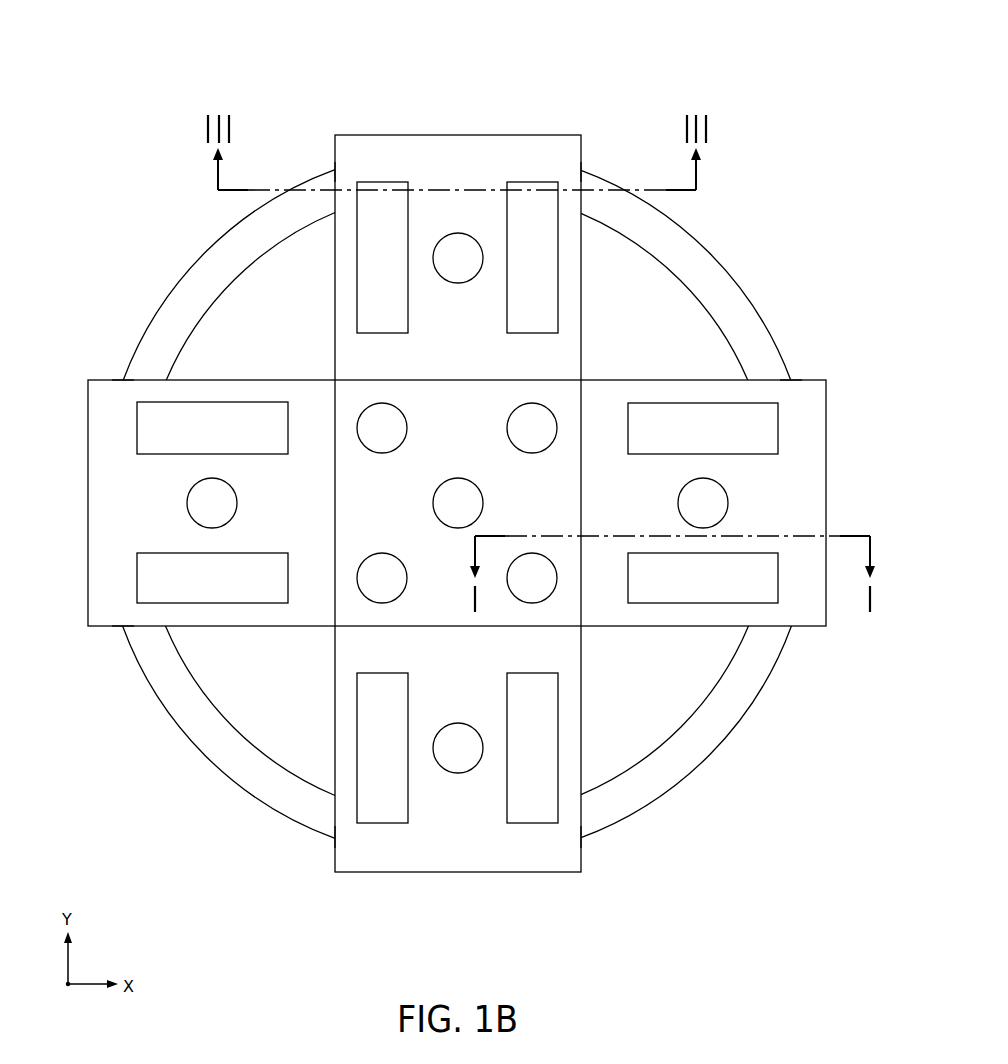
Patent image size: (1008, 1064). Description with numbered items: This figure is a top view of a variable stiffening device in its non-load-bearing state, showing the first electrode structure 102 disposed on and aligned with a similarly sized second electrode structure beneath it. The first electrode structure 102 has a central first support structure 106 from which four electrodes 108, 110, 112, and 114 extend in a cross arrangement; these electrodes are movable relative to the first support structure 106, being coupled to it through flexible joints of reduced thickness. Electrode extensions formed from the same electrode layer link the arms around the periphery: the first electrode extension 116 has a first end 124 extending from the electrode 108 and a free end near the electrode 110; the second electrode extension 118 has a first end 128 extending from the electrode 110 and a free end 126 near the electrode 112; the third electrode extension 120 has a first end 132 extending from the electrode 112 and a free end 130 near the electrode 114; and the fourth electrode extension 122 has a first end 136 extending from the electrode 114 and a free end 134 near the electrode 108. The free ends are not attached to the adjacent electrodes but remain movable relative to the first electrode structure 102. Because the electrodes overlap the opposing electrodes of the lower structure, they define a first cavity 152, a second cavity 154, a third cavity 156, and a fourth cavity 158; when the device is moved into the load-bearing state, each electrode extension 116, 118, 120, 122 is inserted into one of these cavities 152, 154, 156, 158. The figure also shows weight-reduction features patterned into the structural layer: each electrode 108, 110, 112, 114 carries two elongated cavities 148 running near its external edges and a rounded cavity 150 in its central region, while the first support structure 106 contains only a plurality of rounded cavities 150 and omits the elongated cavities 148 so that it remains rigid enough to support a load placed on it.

The first electrode structure 102 is at (838, 472).
The first support structure 106 is at (458, 390).
The electrode 108 is at (415, 873).
The electrode 110 is at (826, 505).
The electrode 112 is at (418, 134).
The electrode 114 is at (262, 380).
The first electrode extension 116 is at (713, 752).
The second electrode extension 118 is at (717, 252).
The third electrode extension 120 is at (200, 252).
The fourth electrode extension 122 is at (200, 755).
The first end 124 is at (578, 827).
The free end 126 is at (581, 172).
The first end 128 is at (776, 378).
The free end 130 is at (138, 378).
The first end 132 is at (335, 172).
The free end 134 is at (338, 827).
The first end 136 is at (140, 630).
The elongated cavities 148 is at (145, 428).
The rounded cavity 150 is at (187, 503).
The first cavity 152 is at (447, 896).
The second cavity 154 is at (842, 638).
The third cavity 156 is at (448, 110).
The fourth cavity 158 is at (72, 505).